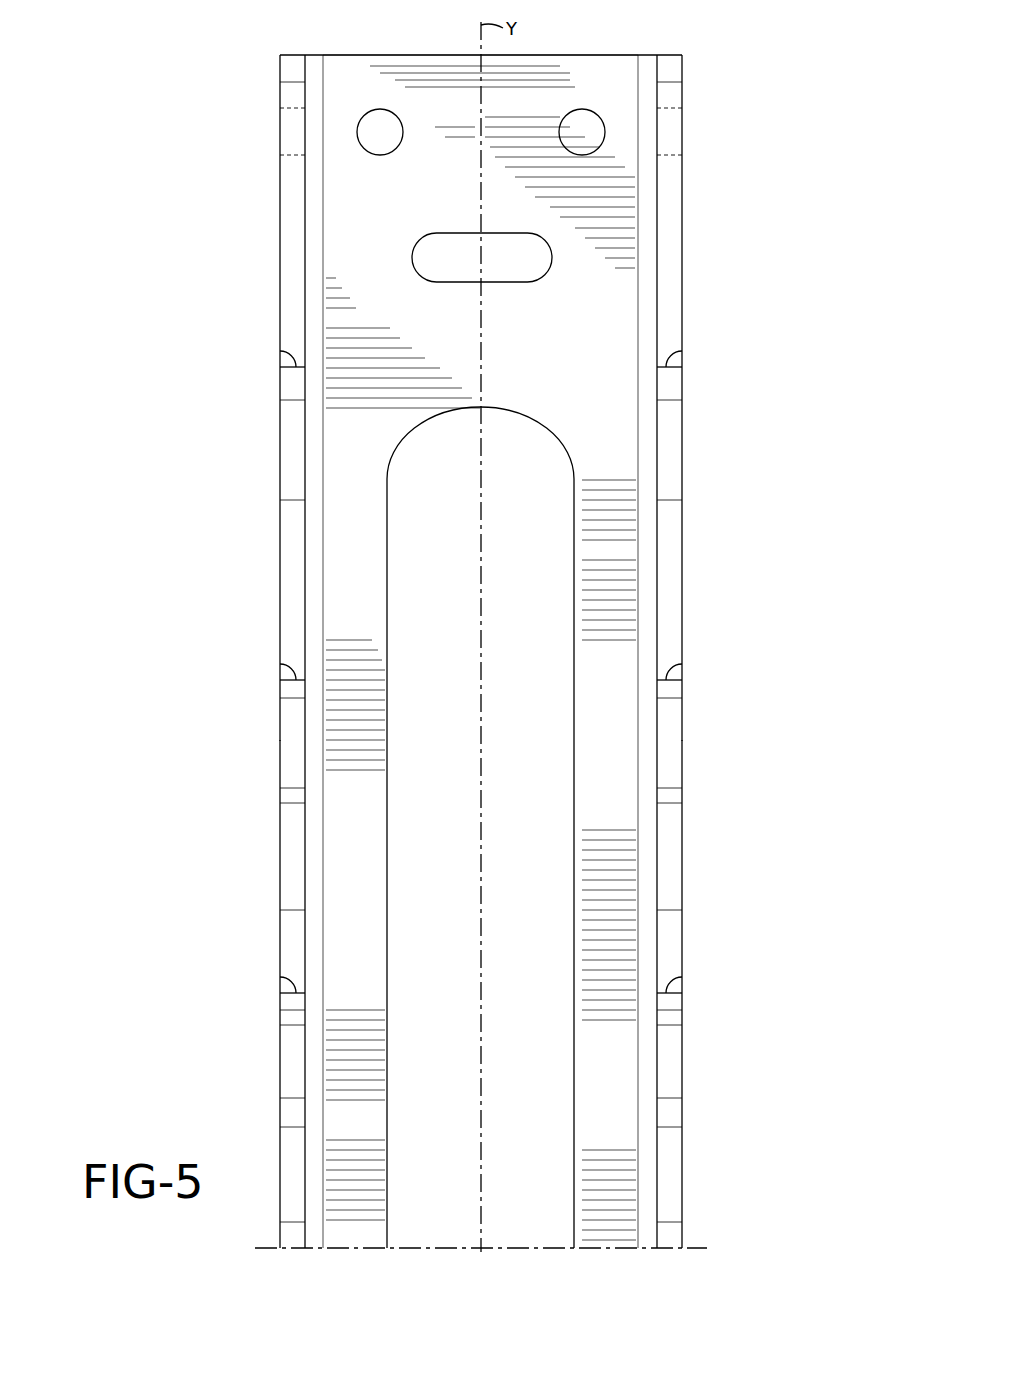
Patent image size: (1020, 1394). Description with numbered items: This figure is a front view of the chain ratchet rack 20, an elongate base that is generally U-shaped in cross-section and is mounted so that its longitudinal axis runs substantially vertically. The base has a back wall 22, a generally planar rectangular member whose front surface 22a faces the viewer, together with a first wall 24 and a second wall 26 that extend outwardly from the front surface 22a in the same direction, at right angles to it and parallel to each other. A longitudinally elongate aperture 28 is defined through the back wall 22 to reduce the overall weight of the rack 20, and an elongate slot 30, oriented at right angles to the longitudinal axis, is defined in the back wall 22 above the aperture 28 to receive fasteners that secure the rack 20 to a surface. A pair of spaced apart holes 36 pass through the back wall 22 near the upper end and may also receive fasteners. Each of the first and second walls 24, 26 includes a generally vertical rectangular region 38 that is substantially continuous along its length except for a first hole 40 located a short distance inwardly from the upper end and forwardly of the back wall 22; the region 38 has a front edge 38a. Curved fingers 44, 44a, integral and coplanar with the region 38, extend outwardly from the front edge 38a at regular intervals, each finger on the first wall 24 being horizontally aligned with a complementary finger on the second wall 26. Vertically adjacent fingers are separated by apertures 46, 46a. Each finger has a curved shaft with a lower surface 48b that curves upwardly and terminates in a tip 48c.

The rack 20 is at (263, 70).
The back wall 22 is at (372, 190).
The front surface 22a is at (586, 347).
The first wall 24 is at (280, 163).
The second wall 26 is at (682, 218).
The aperture 28 is at (430, 512).
The slot 30 is at (450, 247).
The hole 36 is at (373, 142).
The rectangular region 38 is at (283, 245).
The front edge 38a is at (288, 283).
The first hole 40 is at (292, 128).
The finger 44 is at (283, 739).
The finger 44a is at (283, 421).
The aperture 46 is at (283, 644).
The aperture 46a is at (283, 330).
The lower surface 48b is at (292, 485).
The tip 48c is at (290, 357).